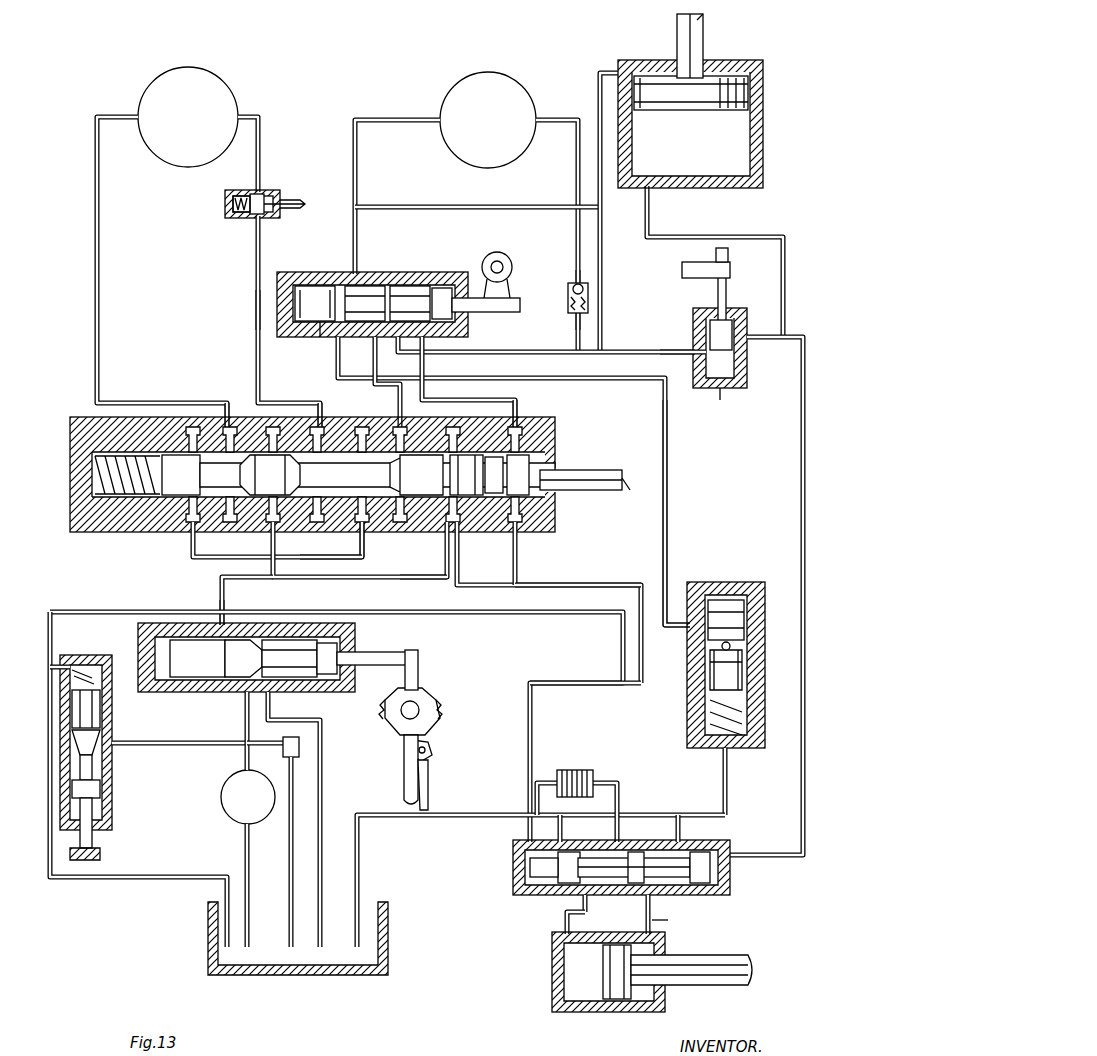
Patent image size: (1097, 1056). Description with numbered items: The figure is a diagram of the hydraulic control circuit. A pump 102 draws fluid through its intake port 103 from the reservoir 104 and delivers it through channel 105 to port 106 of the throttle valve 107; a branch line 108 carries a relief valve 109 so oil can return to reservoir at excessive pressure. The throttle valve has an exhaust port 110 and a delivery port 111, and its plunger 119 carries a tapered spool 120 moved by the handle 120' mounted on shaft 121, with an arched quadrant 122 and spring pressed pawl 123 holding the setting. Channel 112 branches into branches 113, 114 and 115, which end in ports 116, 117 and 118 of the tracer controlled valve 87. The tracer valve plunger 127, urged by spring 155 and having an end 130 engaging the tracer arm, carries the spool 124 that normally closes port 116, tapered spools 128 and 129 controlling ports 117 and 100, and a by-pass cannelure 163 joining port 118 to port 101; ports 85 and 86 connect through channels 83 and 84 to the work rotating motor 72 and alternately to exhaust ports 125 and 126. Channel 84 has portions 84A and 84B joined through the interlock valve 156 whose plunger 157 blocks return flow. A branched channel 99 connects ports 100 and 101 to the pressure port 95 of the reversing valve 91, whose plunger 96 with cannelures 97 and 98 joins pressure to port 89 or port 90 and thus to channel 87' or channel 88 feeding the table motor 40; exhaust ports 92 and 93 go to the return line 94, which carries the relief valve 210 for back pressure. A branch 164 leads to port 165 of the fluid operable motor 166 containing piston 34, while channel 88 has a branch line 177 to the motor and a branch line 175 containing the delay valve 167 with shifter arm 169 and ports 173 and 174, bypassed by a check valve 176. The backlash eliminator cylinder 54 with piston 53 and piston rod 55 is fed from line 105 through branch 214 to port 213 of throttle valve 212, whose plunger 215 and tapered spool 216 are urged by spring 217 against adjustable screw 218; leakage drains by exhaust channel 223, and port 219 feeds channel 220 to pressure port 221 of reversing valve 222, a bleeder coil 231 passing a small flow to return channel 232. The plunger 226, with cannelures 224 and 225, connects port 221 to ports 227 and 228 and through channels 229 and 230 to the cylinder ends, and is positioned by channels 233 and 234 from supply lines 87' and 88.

The piston 34 is at (750, 100).
The rotary fluid operable motor 40 is at (520, 88).
The piston 53 is at (618, 980).
The cylinder 54 is at (555, 985).
The piston rod 55 is at (730, 955).
The motor 72 is at (215, 82).
The channel 83 is at (95, 210).
The channel 84 is at (256, 260).
The portion of channel 84 84A is at (260, 140).
The portion of channel 84 84B is at (256, 300).
The port 85 is at (235, 392).
The port 86 is at (320, 405).
The tracer controlled valve 87 is at (315, 488).
The channel 87' is at (397, 184).
The channel 88 is at (575, 170).
The port 89 is at (340, 272).
The port 90 is at (398, 355).
The reversing valve 91 is at (310, 270).
The exhaust port 92 is at (318, 340).
The exhaust port 93 is at (470, 334).
The return line 94 is at (668, 475).
The pressure port 95 is at (348, 345).
The valve plunger 96 is at (442, 286).
The cannelure 97 is at (375, 284).
The cannelure 98 is at (418, 284).
The branched channel 99 is at (383, 386).
The port 100 is at (392, 410).
The port 101 is at (528, 428).
The pump 102 is at (221, 789).
The intake port 103 is at (244, 860).
The reservoir 104 is at (206, 922).
The channel 105 is at (244, 732).
The port 106 is at (232, 693).
The throttle valve 107 is at (185, 694).
The branch line 108 is at (282, 745).
The relief valve 109 is at (300, 745).
The exhaust port 110 is at (272, 700).
The delivery port 111 is at (214, 620).
The channel 112 is at (362, 590).
The branch 113 is at (283, 590).
The branch 114 is at (444, 580).
The branch 115 is at (530, 585).
The port 116 is at (283, 540).
The port 117 is at (462, 540).
The port 118 is at (520, 542).
The valve plunger 119 is at (380, 652).
The tapered spool 120 is at (288, 630).
The handle 120' is at (395, 772).
The shaft 121 is at (418, 705).
The arched quadrant 122 is at (435, 718).
The spring pressed pawl 123 is at (432, 748).
The spool 124 is at (270, 455).
The exhaust port 125 is at (190, 535).
The exhaust port 126 is at (370, 540).
The plunger 127 is at (568, 470).
The tapered spool 128 is at (463, 450).
The tapered spool 129 is at (408, 450).
The end 130 is at (628, 495).
The spring 155 is at (130, 500).
The interlock valve 156 is at (238, 216).
The plunger 157 is at (283, 196).
The by-pass cannelure 163 is at (515, 402).
The branch 164 is at (458, 200).
The port 165 is at (655, 196).
The fluid operable motor 166 is at (760, 135).
The delay valve 167 is at (745, 378).
The shifter arm 169 is at (732, 270).
The port 173 is at (748, 360).
The port 174 is at (698, 348).
The branch line 175 is at (728, 254).
The check valve 176 is at (572, 284).
The branch line 177 is at (620, 296).
The relief valve 210 is at (688, 708).
The throttle valve 212 is at (104, 668).
The port 213 is at (102, 752).
The branch 214 is at (192, 745).
The plunger 215 is at (95, 790).
The tapered spool 216 is at (102, 735).
The spring 217 is at (80, 665).
The adjustable screw 218 is at (100, 852).
The port 219 is at (92, 768).
The channel 220 is at (155, 610).
The pressure port 221 is at (628, 850).
The reversing valve 222 is at (715, 838).
The exhaust channel 223 is at (55, 880).
The cannelure 224 is at (603, 848).
The cannelure 225 is at (685, 850).
The plunger 226 is at (525, 860).
The port 227 is at (572, 897).
The port 228 is at (655, 898).
The channel 229 is at (560, 920).
The channel 230 is at (668, 920).
The bleeder coil 231 is at (585, 768).
The return channel 232 is at (438, 822).
The channel 233 is at (595, 682).
The channel 234 is at (800, 512).